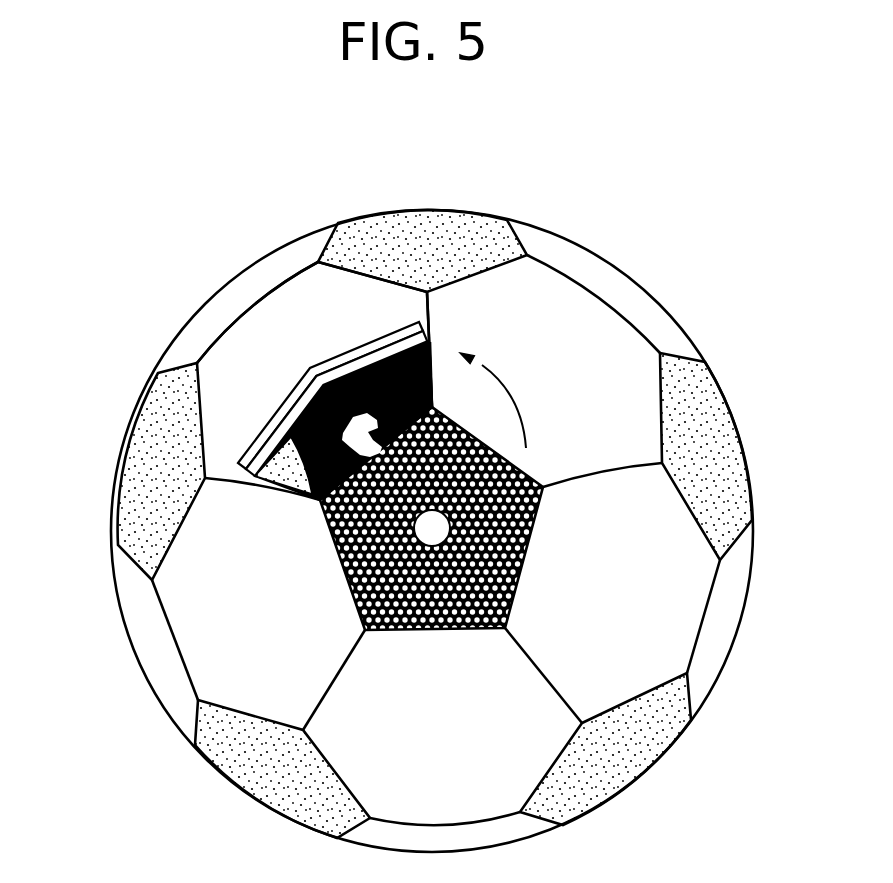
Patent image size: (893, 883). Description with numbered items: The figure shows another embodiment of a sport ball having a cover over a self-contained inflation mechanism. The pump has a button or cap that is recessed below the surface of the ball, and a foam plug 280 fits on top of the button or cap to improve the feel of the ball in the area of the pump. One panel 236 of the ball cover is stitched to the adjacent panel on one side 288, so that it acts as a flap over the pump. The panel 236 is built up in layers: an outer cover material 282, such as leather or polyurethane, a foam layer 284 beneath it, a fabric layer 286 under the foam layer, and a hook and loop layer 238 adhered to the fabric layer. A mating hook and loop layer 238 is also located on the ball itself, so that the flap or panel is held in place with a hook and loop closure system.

The panel 236 is at (300, 347).
The hook and loop layer 238 is at (522, 560).
The foam plug 280 is at (432, 343).
The cover material 282 is at (290, 390).
The foam layer 284 is at (254, 441).
The fabric layer 286 is at (253, 493).
The stitched side 288 is at (435, 398).